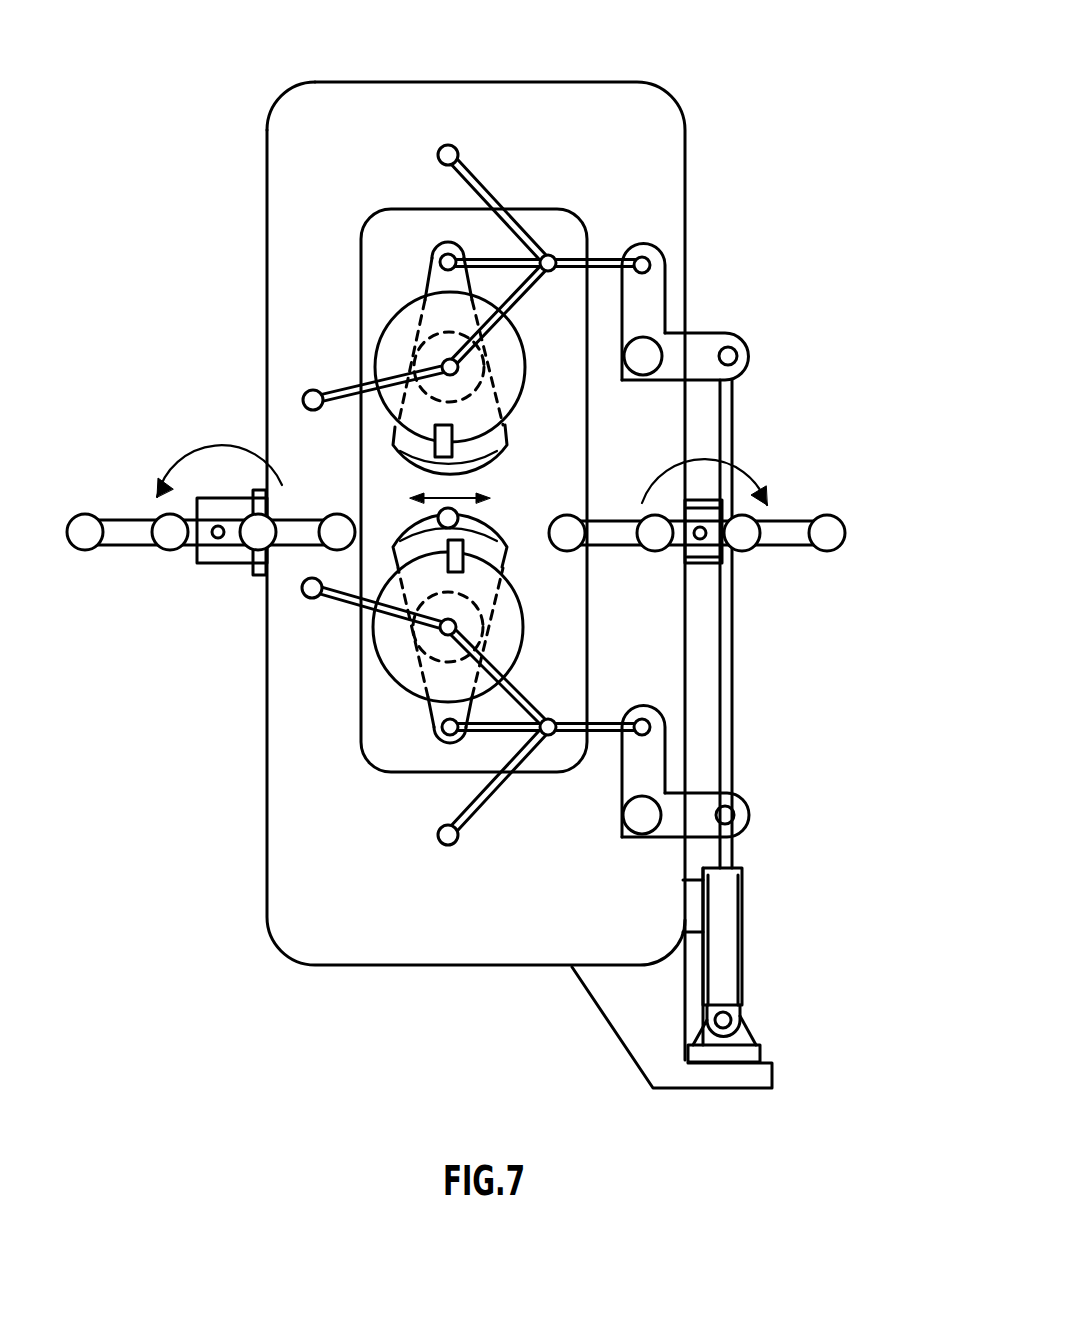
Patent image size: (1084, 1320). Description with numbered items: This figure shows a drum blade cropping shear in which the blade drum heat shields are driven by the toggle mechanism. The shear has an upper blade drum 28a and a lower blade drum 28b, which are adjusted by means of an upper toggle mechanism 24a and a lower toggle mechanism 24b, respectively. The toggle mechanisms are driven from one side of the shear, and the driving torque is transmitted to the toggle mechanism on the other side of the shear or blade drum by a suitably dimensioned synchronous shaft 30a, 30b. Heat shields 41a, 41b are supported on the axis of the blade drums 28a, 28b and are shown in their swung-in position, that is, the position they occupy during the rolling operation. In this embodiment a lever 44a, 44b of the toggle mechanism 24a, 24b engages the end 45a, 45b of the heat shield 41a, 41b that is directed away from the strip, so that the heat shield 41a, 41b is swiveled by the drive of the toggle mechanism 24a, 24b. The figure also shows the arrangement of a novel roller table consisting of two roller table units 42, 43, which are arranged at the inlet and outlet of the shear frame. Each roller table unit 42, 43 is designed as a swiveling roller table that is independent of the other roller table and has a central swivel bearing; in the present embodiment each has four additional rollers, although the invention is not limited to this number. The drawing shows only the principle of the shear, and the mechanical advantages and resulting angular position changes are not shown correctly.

The upper toggle mechanism 24a is at (585, 187).
The lower toggle mechanism 24b is at (525, 788).
The upper blade drum 28a is at (397, 340).
The lower blade drum 28b is at (400, 660).
The synchronous shaft 30a is at (650, 352).
The synchronous shaft 30b is at (648, 812).
The heat shield 41a is at (505, 443).
The heat shield 41b is at (490, 523).
The roller table unit 42 is at (138, 533).
The roller table unit 43 is at (783, 535).
The lever 44a is at (500, 257).
The lever 44b is at (487, 730).
The end of the heat shield 45a is at (433, 253).
The end of the heat shield 45b is at (443, 720).